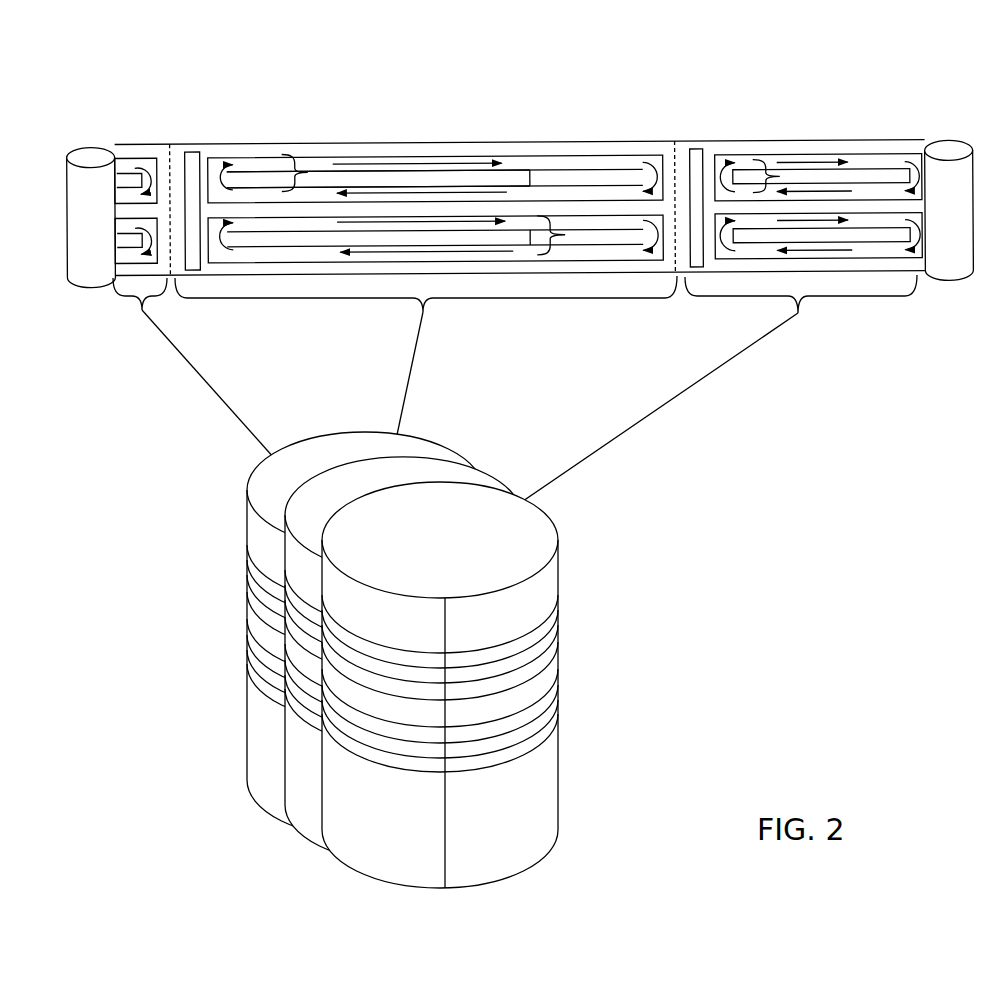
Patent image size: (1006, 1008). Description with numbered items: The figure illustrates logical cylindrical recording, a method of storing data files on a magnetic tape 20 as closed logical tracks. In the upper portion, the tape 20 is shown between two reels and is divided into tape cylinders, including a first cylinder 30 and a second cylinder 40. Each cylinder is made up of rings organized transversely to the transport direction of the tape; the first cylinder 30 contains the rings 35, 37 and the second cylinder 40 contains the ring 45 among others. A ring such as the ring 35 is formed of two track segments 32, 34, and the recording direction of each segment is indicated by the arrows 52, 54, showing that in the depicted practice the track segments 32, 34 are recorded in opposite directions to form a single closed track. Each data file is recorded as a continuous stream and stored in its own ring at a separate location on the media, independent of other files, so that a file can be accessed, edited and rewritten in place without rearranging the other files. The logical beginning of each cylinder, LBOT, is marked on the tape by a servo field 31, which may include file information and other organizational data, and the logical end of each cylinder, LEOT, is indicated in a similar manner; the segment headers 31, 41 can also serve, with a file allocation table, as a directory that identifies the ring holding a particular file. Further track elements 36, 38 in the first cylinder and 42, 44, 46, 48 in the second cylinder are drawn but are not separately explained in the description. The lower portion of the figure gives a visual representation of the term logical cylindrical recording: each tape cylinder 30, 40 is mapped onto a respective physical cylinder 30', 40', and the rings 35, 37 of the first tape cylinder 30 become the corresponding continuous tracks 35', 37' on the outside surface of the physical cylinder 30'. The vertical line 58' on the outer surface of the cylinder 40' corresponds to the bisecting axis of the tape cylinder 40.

The magnetic tape 20 is at (167, 383).
The logical beginning of cylinder LBOT is at (171, 144).
The logical end of cylinder LEOT is at (677, 163).
The cylinder 30 is at (426, 372).
The servo field 31 is at (200, 150).
The track segment 32 is at (558, 158).
The track segment 34 is at (583, 189).
The ring 35 is at (350, 138).
The second track region of first data band 36 is at (242, 220).
The ring 37 is at (606, 272).
The track segment of second track region 38 is at (292, 250).
The cylinder 40 is at (701, 401).
The segment header 41 is at (703, 169).
The first track region of second data band 42 is at (867, 156).
The track segment of second data band 44 is at (889, 186).
The ring 45 is at (782, 178).
The second track region of second data band 46 is at (888, 215).
The track segment of second track region of second data band 48 is at (858, 252).
The arrow 52 is at (400, 162).
The arrow 54 is at (460, 189).
The physical cylinder 30' is at (372, 635).
The physical cylinder 40' is at (505, 694).
The continuous track 35' is at (345, 622).
The continuous track 37' is at (345, 689).
The vertical line 58' is at (530, 752).